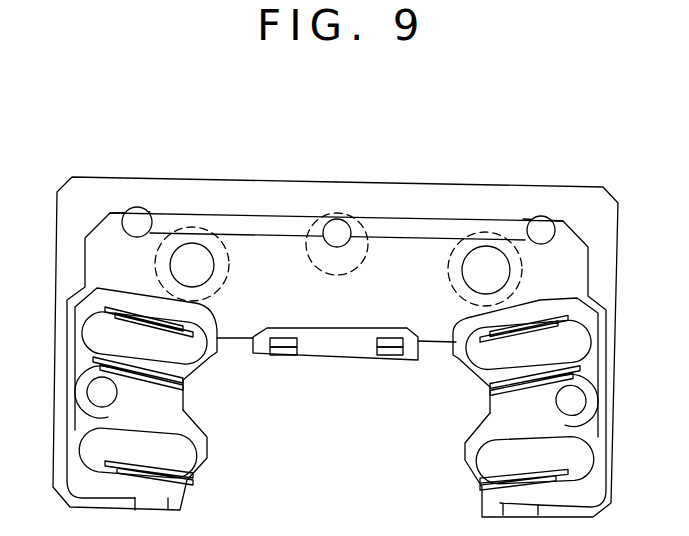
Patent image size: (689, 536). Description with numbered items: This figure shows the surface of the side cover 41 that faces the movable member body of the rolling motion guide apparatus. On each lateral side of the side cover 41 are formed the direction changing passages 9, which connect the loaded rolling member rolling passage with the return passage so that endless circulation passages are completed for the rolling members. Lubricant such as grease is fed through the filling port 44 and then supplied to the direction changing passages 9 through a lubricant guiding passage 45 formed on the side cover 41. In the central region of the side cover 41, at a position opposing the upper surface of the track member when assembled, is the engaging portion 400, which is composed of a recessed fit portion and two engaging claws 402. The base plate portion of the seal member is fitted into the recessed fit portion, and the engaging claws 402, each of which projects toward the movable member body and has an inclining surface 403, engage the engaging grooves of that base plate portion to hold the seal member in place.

The side cover 41 is at (193, 160).
The lubricant guiding passage 45 is at (264, 219).
The filling port 44 is at (342, 224).
The direction changing passage 9 is at (173, 428).
The engaging portion 400 is at (343, 362).
The engaging claw 402 is at (281, 338).
The inclining surface 403 is at (290, 357).